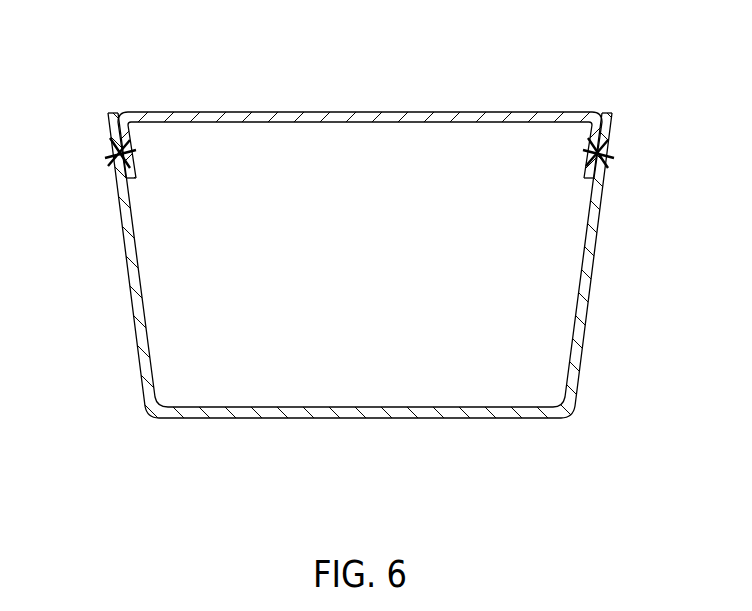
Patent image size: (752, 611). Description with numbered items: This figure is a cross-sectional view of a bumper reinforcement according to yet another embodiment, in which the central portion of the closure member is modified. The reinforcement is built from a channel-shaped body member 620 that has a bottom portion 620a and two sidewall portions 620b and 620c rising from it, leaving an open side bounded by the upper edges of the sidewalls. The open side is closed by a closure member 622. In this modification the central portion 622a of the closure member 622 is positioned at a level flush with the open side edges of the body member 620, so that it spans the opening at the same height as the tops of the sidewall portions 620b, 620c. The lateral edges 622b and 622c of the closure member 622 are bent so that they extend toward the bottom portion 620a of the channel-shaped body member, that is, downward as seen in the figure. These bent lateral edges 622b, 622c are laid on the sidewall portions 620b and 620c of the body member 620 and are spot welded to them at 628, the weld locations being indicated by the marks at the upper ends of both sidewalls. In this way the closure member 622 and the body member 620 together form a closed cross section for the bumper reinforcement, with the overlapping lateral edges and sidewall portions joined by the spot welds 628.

The body member 620 is at (362, 298).
The bottom portion 620a is at (318, 419).
The sidewall portion 620b is at (119, 206).
The sidewall portion 620c is at (601, 207).
The closure member 622 is at (360, 113).
The central portion 622a is at (385, 112).
The lateral edge 622b is at (130, 133).
The lateral edge 622c is at (590, 133).
The spot weld 628 is at (109, 151).